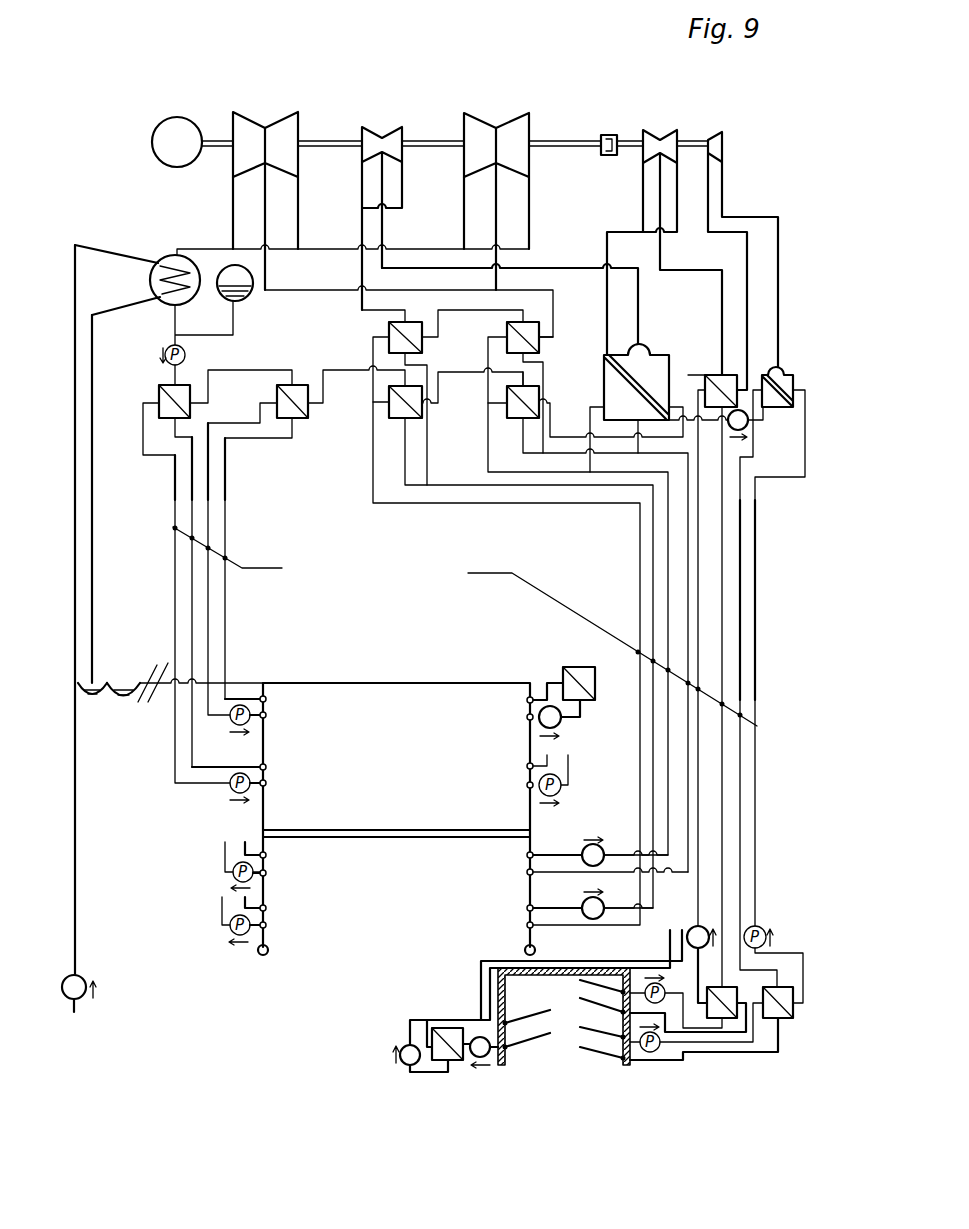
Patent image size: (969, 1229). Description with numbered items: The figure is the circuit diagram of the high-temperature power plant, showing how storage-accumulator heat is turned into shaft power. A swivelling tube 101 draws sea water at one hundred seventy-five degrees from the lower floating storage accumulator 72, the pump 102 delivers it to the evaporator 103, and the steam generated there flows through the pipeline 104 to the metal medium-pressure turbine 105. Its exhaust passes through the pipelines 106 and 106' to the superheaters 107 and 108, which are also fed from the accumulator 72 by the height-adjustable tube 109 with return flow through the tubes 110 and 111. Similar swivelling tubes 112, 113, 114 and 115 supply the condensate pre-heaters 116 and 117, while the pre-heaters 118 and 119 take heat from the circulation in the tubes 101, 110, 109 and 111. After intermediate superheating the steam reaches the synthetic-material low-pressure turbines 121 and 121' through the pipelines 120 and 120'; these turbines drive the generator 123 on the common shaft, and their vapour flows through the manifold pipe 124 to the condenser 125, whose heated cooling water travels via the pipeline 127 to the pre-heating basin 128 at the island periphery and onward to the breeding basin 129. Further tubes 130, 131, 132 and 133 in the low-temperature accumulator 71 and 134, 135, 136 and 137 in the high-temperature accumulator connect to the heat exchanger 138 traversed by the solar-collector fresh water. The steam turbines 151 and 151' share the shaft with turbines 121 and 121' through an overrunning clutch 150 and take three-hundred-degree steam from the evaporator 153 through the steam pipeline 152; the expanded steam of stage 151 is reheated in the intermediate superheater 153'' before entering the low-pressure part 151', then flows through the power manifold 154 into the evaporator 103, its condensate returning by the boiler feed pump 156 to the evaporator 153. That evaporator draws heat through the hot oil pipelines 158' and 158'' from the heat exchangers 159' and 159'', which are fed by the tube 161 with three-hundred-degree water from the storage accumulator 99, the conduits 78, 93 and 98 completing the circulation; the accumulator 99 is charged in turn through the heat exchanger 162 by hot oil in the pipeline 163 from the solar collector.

The upper tank section 71 is at (400, 771).
The lower floating storage accumulator 72 is at (400, 929).
The conduits 78 is at (270, 568).
The pump 93 is at (84, 997).
The conduit 98 is at (75, 858).
The lower storage accumulator 99 is at (627, 1066).
The tube 101 is at (530, 855).
The pump 102 is at (582, 850).
The evaporator 103 is at (651, 362).
The pipeline 104 is at (641, 300).
The medium-pressure turbine 105 is at (379, 133).
The pipeline 106 is at (401, 185).
The pipeline 106' is at (335, 236).
The superheater 107 is at (392, 332).
The superheater 108 is at (528, 332).
The tube 109 is at (530, 908).
The tube 110 is at (530, 872).
The tube 111 is at (530, 925).
The inlet and discharge tube 112 is at (263, 699).
The inlet and discharge tube 113 is at (263, 715).
The inlet and discharge tube 114 is at (263, 767).
The inlet and discharge tube 115 is at (263, 783).
The condensate pre-heater 116 is at (159, 397).
The condensate pre-heater 117 is at (292, 386).
The condensate pre-heater 118 is at (393, 422).
The condensate pre-heater 119 is at (514, 422).
The pipeline 120 is at (515, 213).
The pipeline 120' is at (284, 213).
The low-pressure turbine 121 is at (496, 190).
The low-pressure turbine 121' is at (265, 189).
The generator 123 is at (200, 152).
The manifold pipe 124 is at (210, 246).
The condenser 125 is at (162, 262).
The pipeline 127 is at (92, 553).
The pre-heating basin 128 is at (96, 680).
The collecting basin 129 is at (125, 688).
The tube 130 is at (530, 700).
The tube 131 is at (530, 717).
The tube 132 is at (530, 766).
The tube 133 is at (530, 785).
The tube 134 is at (263, 855).
The tube 135 is at (263, 873).
The tube 136 is at (263, 908).
The tube 137 is at (263, 925).
The heat exchanger 138 is at (592, 680).
The coupling 150 is at (606, 133).
The steam turbine 151 is at (727, 247).
The steam turbine 151' is at (682, 229).
The steam pipeline 152 is at (762, 218).
The evaporator 153 is at (786, 365).
The intermediate superheater 153'' is at (754, 343).
The power manifold 154 is at (607, 232).
The boiler feed pump 156 is at (748, 426).
The hot oil pipeline 158' is at (752, 600).
The hot oil pipeline 158'' is at (773, 600).
The heat exchanger 159' is at (688, 1038).
The heat exchanger 159'' is at (716, 1038).
The tube 161 is at (583, 982).
The heat exchanger 162 is at (448, 1060).
The pipeline 163 is at (680, 950).